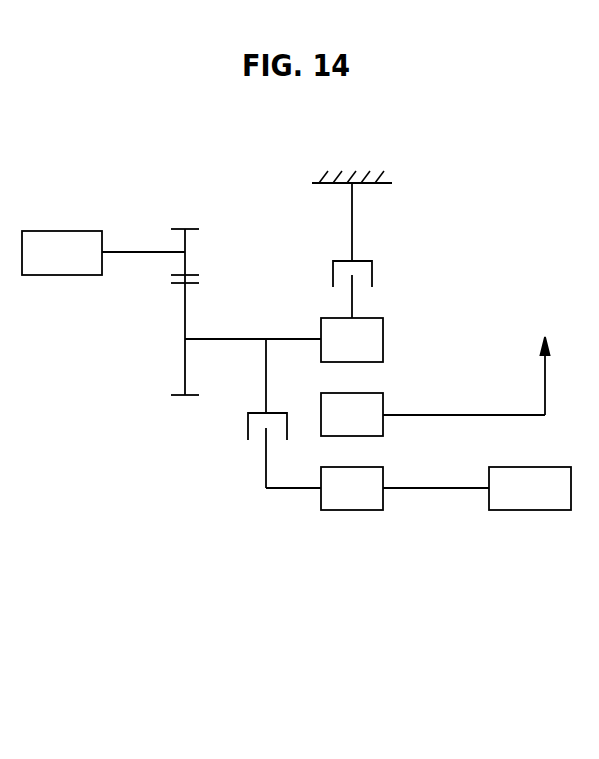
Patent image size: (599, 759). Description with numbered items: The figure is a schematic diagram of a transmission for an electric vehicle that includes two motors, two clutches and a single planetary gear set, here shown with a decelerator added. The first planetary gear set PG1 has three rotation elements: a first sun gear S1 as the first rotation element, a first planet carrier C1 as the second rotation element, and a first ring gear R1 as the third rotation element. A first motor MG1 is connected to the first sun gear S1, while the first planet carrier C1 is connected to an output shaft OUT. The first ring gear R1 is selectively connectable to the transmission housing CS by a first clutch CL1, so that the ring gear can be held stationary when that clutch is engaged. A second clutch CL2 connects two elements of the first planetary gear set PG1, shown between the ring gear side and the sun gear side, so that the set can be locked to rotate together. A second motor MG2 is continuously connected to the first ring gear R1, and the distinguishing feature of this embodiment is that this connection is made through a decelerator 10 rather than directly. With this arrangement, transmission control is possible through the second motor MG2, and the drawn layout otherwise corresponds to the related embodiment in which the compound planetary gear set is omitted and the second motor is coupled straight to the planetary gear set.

The decelerator 10 is at (172, 229).
The second motor MG2 is at (103, 253).
The first motor MG1 is at (477, 488).
The transmission housing CS is at (321, 178).
The first clutch CL1 is at (374, 250).
The second clutch CL2 is at (260, 450).
The first ring gear R1 is at (352, 340).
The first planet carrier C1 is at (352, 414).
The first sun gear S1 is at (352, 488).
The output shaft OUT is at (483, 413).
The first planetary gear set PG1 is at (351, 543).